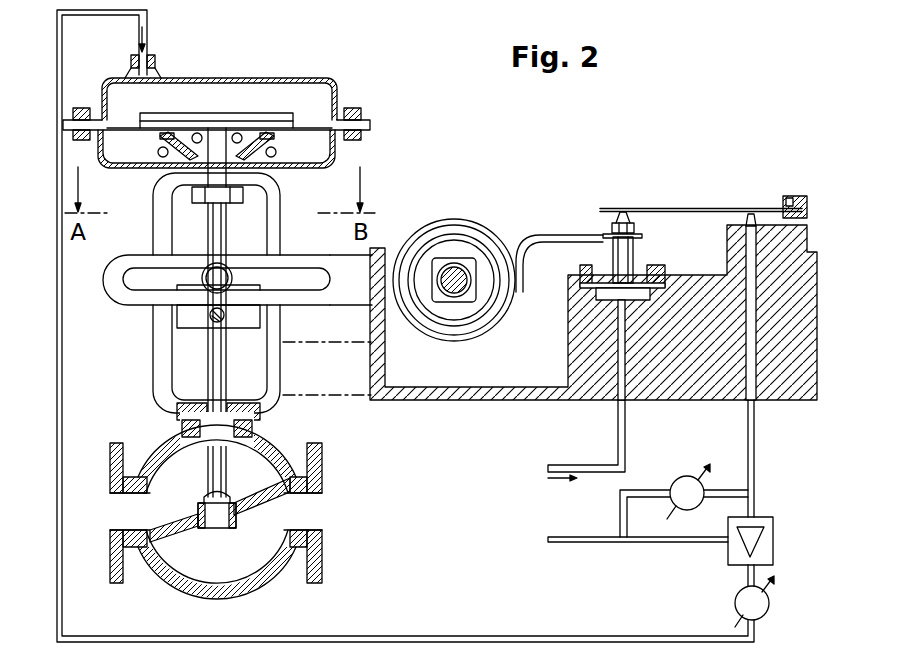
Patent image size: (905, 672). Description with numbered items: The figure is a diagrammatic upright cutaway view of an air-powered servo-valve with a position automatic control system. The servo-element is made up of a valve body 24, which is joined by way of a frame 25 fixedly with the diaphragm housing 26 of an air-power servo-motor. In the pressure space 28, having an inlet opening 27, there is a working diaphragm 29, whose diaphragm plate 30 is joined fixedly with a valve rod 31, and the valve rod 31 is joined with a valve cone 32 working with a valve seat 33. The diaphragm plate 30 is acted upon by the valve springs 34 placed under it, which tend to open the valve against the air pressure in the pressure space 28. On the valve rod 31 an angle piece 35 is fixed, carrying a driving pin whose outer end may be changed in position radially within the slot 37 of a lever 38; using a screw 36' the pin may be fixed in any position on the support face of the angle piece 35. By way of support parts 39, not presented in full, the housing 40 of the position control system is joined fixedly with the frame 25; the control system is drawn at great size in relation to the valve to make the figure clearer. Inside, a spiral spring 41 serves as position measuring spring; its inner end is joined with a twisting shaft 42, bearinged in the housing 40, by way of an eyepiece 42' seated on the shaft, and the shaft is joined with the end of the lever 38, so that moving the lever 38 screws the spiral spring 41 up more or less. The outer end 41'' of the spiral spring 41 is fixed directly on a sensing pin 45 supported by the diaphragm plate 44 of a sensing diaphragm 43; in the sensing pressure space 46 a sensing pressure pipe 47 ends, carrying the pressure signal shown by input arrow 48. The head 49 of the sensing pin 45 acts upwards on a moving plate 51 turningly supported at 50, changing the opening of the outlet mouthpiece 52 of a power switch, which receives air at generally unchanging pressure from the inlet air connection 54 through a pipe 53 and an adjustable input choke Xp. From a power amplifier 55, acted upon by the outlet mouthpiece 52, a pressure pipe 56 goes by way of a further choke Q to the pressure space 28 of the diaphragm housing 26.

The valve body 24 is at (170, 580).
The frame 25 is at (272, 370).
The diaphragm housing 26 is at (298, 80).
The inlet opening 27 is at (136, 62).
The pressure space 28 is at (115, 97).
The working diaphragm 29 is at (326, 102).
The diaphragm plate 30 is at (258, 95).
The valve rod 31 is at (213, 372).
The valve cone 32 is at (202, 500).
The valve seat 33 is at (218, 514).
The valve springs 34 is at (158, 147).
The angle piece 35 is at (185, 318).
The screw 36' is at (173, 256).
The slot 37 is at (135, 283).
The lever 38 is at (340, 298).
The support parts 39 is at (333, 392).
The housing 40 is at (428, 393).
The spiral spring 41 is at (454, 262).
The outer end of spiral spring 41'' is at (559, 238).
The eyepiece 42' is at (454, 243).
The twisting shaft 42 is at (468, 240).
The sensing diaphragm 43 is at (644, 272).
The diaphragm plate 44 is at (606, 287).
The sensing pin 45 is at (617, 263).
The sensing pressure space 46 is at (612, 298).
The sensing pressure pipe 47 is at (620, 351).
The input arrow 48 is at (552, 480).
The head of sensing pin 49 is at (622, 211).
The turning support 50 is at (795, 195).
The moving plate 51 is at (680, 208).
The outlet mouthpiece 52 is at (751, 222).
The pipe 53 is at (747, 386).
The inlet air connection 54 is at (552, 537).
The power amplifier 55 is at (760, 518).
The pressure pipe 56 is at (147, 30).
The input choke Xp is at (677, 483).
The choke Q is at (767, 606).